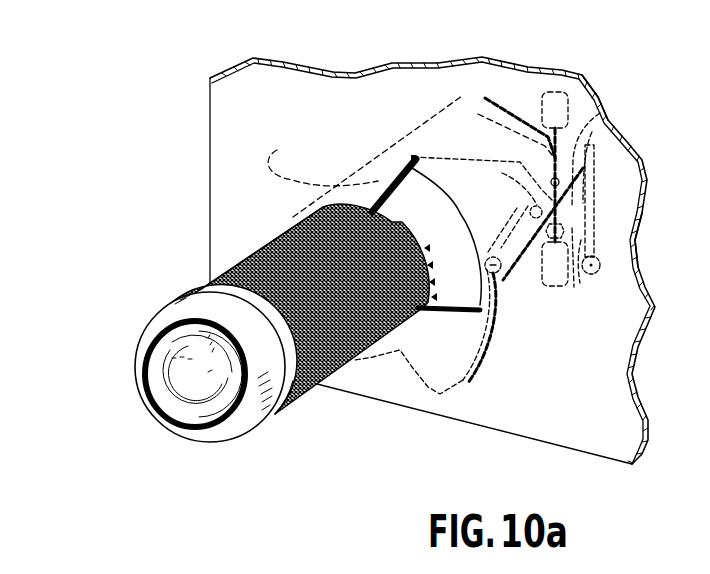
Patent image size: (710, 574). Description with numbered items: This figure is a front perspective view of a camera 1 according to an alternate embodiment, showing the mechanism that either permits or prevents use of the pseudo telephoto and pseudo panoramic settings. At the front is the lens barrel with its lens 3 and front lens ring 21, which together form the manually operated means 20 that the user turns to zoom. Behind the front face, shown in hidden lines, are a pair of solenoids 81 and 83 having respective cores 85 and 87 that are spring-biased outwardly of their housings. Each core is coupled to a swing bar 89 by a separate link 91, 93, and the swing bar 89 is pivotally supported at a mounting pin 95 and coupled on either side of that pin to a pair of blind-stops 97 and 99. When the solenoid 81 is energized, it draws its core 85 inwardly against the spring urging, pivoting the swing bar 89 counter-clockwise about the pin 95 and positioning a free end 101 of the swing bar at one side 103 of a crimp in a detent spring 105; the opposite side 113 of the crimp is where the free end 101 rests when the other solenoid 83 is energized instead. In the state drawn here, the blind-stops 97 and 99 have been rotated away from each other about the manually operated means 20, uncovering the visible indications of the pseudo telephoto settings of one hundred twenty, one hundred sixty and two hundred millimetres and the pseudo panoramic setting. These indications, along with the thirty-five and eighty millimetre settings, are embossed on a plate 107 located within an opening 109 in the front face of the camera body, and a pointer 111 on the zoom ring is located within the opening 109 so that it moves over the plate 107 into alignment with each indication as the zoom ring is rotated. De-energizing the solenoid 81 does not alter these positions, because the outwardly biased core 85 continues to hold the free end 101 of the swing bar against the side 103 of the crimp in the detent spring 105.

The camera 1 is at (243, 87).
The lens 3 is at (180, 382).
The manually operated means 20 is at (232, 258).
The lens ring 21 is at (258, 358).
The solenoid 81 is at (557, 90).
The solenoid 83 is at (540, 288).
The core 85 is at (552, 148).
The core 87 is at (570, 308).
The swing bar 89 is at (515, 215).
The link 91 is at (490, 107).
The link 93 is at (587, 275).
The mounting pin 95 is at (525, 188).
The blind-stop 97 is at (365, 156).
The blind-stop 99 is at (466, 380).
The free end 101 is at (594, 92).
The side of crimp 103 is at (600, 113).
The detent spring 105 is at (593, 227).
The plate 107 is at (385, 205).
The opening 109 is at (460, 214).
The pointer 111 is at (287, 219).
The other side of crimp 113 is at (591, 210).